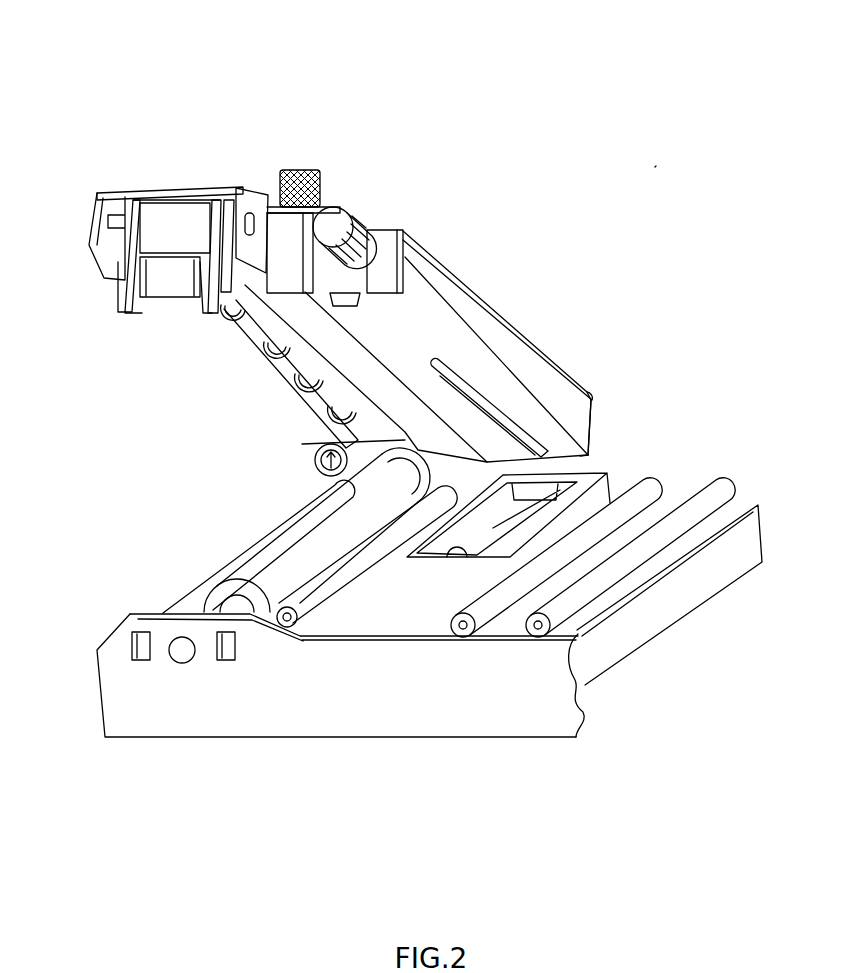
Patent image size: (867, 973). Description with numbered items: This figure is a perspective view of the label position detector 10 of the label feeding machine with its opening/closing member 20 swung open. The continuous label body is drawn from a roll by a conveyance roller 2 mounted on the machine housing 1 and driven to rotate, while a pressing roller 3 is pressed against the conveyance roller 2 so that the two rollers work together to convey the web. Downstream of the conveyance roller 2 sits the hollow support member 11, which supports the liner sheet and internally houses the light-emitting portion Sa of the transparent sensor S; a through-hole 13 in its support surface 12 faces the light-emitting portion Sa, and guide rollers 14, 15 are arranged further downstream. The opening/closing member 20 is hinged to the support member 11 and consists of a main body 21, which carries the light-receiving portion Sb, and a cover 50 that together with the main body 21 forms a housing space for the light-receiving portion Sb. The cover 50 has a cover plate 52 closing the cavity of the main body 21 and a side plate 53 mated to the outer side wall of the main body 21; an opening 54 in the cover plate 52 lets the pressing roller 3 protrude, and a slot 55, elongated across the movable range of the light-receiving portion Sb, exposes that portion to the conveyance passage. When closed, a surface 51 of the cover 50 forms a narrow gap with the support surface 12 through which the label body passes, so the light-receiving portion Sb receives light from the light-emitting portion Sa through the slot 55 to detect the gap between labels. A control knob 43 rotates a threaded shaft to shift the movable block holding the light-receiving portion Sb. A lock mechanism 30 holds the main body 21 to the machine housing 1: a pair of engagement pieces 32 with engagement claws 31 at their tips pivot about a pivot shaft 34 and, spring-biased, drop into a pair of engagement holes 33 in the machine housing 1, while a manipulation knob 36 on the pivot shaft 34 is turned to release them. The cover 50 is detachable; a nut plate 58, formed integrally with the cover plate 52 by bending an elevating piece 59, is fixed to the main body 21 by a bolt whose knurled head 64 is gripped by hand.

The machine housing 1 is at (541, 716).
The conveyance roller 2 is at (263, 560).
The pressing roller 3 is at (249, 394).
The label position detector 10 is at (651, 169).
The support member 11 is at (380, 609).
The support surface 12 is at (343, 622).
The through-hole 13 is at (450, 547).
The guide roller 14 is at (607, 473).
The guide roller 15 is at (733, 490).
The opening/closing member 20 is at (405, 238).
The main body 21 is at (430, 248).
The lock mechanism 30 is at (180, 183).
The engagement claw 31 is at (245, 320).
The engagement piece 32 is at (127, 293).
The engagement hole 33 is at (136, 660).
The pivot shaft 34 is at (115, 192).
The manipulation knob 36 is at (168, 287).
The control knob 43 is at (355, 245).
The cover 50 is at (423, 338).
The surface 51 is at (417, 355).
The cover plate 52 is at (380, 322).
The side plate 53 is at (517, 362).
The opening 54 is at (300, 430).
The slot 55 is at (488, 402).
The nut plate 58 is at (267, 195).
The elevating piece 59 is at (247, 190).
The head 64 is at (314, 174).
The transparent sensor S is at (667, 370).
The light-emitting portion Sa is at (589, 455).
The light-receiving portion Sb is at (593, 398).